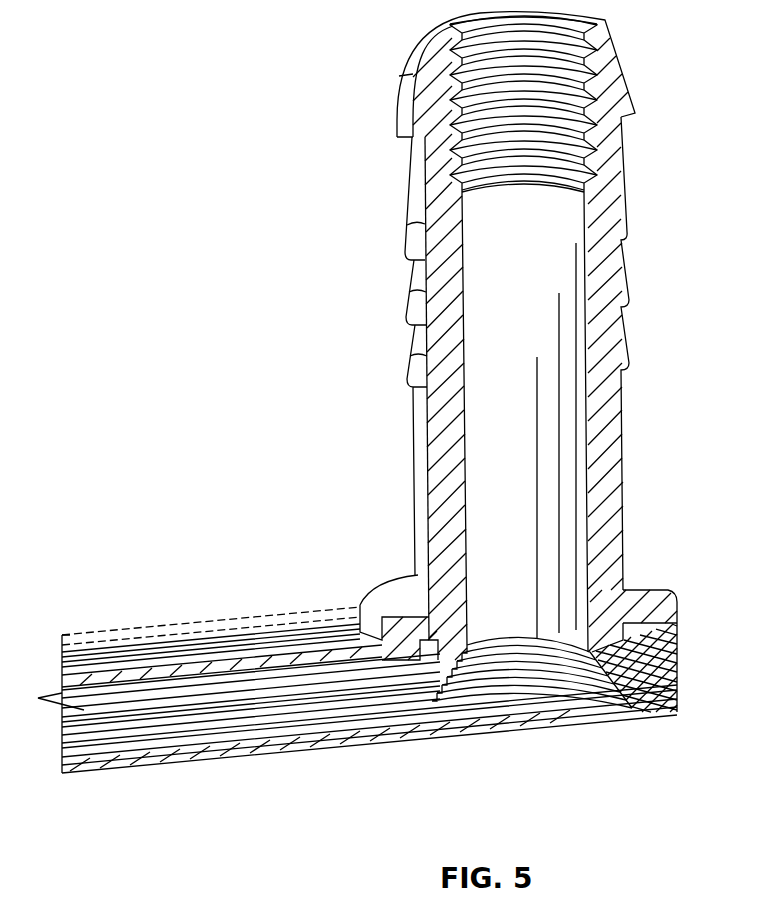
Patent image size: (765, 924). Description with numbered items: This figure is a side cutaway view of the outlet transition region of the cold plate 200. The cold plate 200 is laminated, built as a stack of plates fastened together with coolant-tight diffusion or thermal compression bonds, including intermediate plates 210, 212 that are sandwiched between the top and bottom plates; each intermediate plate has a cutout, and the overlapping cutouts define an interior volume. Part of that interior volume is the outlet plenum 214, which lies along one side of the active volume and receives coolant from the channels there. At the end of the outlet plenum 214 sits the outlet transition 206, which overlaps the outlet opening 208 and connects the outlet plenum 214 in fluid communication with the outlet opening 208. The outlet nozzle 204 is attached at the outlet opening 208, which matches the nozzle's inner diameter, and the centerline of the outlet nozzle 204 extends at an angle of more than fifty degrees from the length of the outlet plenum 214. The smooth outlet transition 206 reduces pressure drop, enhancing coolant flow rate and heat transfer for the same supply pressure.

The cold plate 200 is at (211, 593).
The outlet nozzle 204 is at (386, 186).
The outlet transition 206 is at (508, 622).
The outlet opening 208 is at (588, 662).
The intermediate plate 210 is at (563, 658).
The intermediate plate 212 is at (512, 690).
The outlet plenum 214 is at (162, 745).